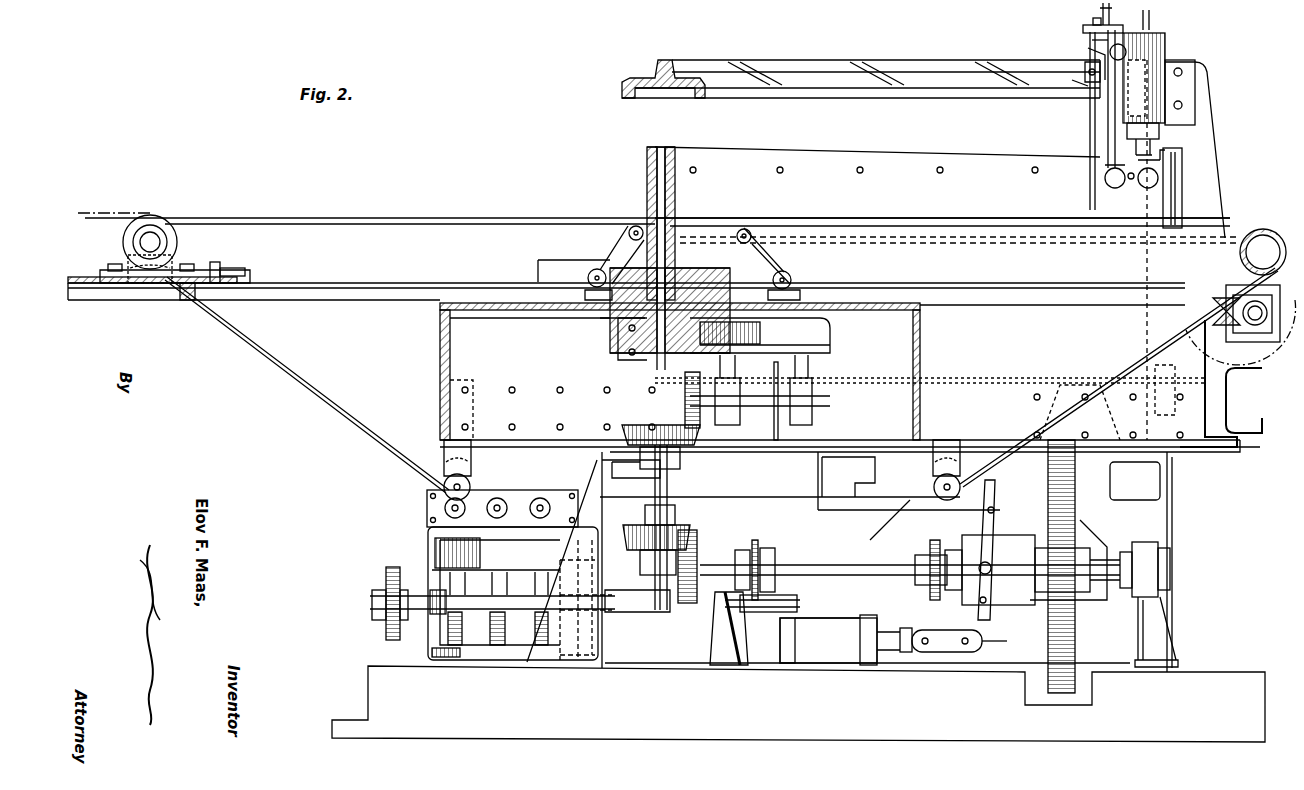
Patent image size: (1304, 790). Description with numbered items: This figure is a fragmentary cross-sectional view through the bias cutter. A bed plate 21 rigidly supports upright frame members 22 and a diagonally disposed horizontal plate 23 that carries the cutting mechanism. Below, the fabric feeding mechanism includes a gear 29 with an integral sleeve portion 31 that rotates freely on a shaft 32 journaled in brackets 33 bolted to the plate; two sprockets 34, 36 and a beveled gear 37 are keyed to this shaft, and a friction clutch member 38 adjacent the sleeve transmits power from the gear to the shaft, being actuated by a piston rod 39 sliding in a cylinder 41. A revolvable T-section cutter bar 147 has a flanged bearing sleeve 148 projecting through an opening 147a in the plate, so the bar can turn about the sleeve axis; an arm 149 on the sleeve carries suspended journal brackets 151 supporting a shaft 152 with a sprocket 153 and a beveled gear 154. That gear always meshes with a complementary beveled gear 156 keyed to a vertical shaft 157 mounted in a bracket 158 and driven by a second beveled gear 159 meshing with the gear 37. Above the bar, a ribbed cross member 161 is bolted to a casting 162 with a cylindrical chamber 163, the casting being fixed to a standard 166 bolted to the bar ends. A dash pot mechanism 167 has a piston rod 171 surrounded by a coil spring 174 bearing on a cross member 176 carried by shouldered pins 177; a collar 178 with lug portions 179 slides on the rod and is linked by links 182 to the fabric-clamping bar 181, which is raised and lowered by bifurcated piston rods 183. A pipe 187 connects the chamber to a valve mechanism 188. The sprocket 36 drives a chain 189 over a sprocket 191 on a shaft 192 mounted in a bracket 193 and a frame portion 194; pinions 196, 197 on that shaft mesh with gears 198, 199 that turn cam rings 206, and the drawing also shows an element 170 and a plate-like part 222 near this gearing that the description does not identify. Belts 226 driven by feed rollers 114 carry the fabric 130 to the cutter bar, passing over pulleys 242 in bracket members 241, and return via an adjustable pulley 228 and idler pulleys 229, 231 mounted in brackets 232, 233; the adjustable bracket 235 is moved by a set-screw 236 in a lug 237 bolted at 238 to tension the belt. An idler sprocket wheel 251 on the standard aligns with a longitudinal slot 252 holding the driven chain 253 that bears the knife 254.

The bed plate 21 is at (368, 685).
The vertical frame members 22 is at (155, 300).
The horizontal plate 23 is at (450, 318).
The gear 29 is at (1075, 636).
The sleeve portion 31 is at (1040, 535).
The shaft 32 is at (886, 565).
The brackets 33 is at (1160, 637).
The sprocket 34 is at (930, 548).
The sprocket 36 is at (758, 548).
The beveled gear 37 is at (700, 545).
The friction clutch member 38 is at (980, 505).
The piston rod 39 is at (915, 652).
The cylinder 41 is at (840, 605).
The feed rollers 114 is at (1240, 240).
The fabric 130 is at (103, 213).
The cutter bar 147 is at (655, 268).
The opening 147a is at (620, 318).
The flanged bearing sleeve 148 is at (620, 331).
The arm 149 is at (815, 330).
The journal brackets 151 is at (728, 425).
The shaft 152 is at (750, 408).
The sprocket 153 is at (774, 368).
The beveled gear 154 is at (685, 403).
The complementary beveled gear 156 is at (635, 436).
The vertical shaft 157 is at (668, 488).
The bracket 158 is at (612, 478).
The second beveled gear 159 is at (680, 530).
The ribbed cross member 161 is at (793, 68).
The casting 162 is at (1195, 75).
The cylindrical chamber 163 is at (1165, 58).
The standard 166 is at (1212, 185).
The dash pot mechanism 167 is at (1095, 18).
The slide 170 is at (1085, 65).
The piston rod 171 is at (1092, 50).
The coil spring 174 is at (1110, 15).
The cross member 176 is at (1083, 29).
The shouldered pins 177 is at (1092, 40).
The collar 178 is at (1088, 84).
The lug portions 179 is at (1126, 53).
The fabric-clamping bar 181 is at (908, 160).
The links 182 is at (1092, 121).
The bifurcated piston rods 183 is at (1163, 152).
The pipe 187 is at (1150, 17).
The valve mechanism 188 is at (428, 540).
The chain 189 is at (790, 596).
The sprocket 191 is at (718, 610).
The shaft 192 is at (372, 604).
The bracket 193 is at (810, 618).
The frame portion 194 is at (403, 645).
The pinion 196 is at (386, 590).
The pinion 197 is at (560, 660).
The gear 198 is at (392, 568).
The gear 199 is at (588, 655).
The rings 206 is at (500, 580).
The plate 222 is at (488, 510).
The belts 226 is at (345, 360).
The adjustable pulley 228 is at (148, 215).
The idler pulley 229 is at (471, 486).
The idler pulley 231 is at (934, 486).
The bracket 232 is at (471, 462).
The bracket 233 is at (933, 462).
The adjustable bracket 235 is at (155, 235).
The set-screw 236 is at (245, 272).
The lug 237 is at (216, 262).
The bolts 238 is at (114, 264).
The bracket members 241 is at (600, 250).
The pulleys 242 is at (630, 228).
The idler sprocket wheel 251 is at (1245, 380).
The longitudinal slot 252 is at (655, 225).
The driven chain 253 is at (918, 237).
The knife 254 is at (668, 200).